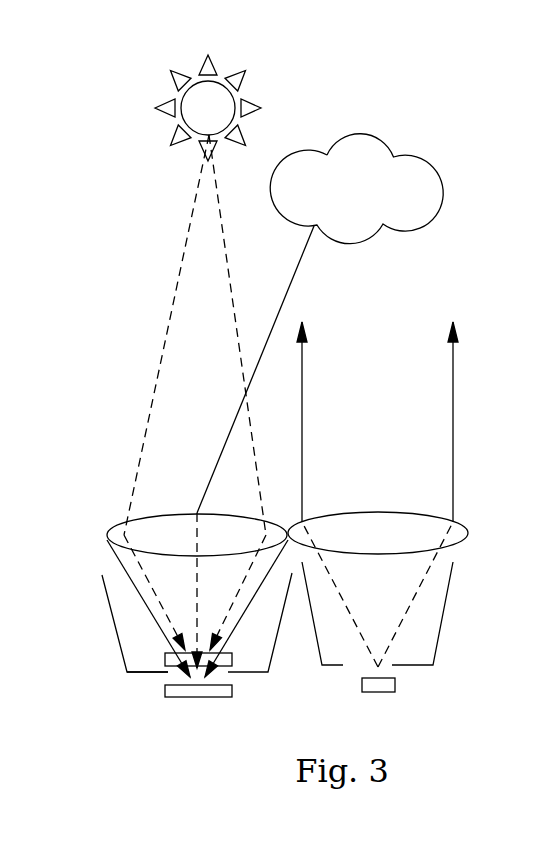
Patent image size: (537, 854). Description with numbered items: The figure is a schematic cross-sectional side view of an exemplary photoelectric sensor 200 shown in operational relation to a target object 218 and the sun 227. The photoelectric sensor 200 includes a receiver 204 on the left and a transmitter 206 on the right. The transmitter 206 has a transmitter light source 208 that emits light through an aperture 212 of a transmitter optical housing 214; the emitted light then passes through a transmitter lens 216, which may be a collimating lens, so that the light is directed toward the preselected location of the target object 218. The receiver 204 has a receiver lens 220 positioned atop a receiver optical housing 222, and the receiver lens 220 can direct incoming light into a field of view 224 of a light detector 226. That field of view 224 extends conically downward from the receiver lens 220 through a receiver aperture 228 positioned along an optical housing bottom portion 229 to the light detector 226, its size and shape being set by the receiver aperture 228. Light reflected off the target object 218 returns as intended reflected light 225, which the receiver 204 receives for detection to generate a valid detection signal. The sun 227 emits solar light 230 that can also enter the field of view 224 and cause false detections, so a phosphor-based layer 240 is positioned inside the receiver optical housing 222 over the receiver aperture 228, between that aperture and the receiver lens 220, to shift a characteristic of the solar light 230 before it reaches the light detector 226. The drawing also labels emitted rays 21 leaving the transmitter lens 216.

The sun 227 is at (181, 98).
The target object 218 is at (443, 190).
The intended reflected light 225 is at (297, 270).
The solar light 230 is at (180, 268).
The receiver lens 220 is at (172, 513).
The transmitter lens 216 is at (468, 533).
The field of view 224 is at (112, 548).
The receiver optical housing 222 is at (122, 653).
The receiver 204 is at (92, 610).
The phosphor-based layer 240 is at (164, 658).
The light detector 226 is at (198, 699).
The optical housing bottom portion 229 is at (138, 674).
The receiver aperture 228 is at (238, 682).
The photoelectric sensor 200 is at (234, 744).
The transmitter optical housing 214 is at (442, 643).
The transmitter 206 is at (474, 600).
The emitted light rays 21 is at (453, 370).
The transmitter light source 208 is at (378, 694).
The aperture 212 is at (402, 678).